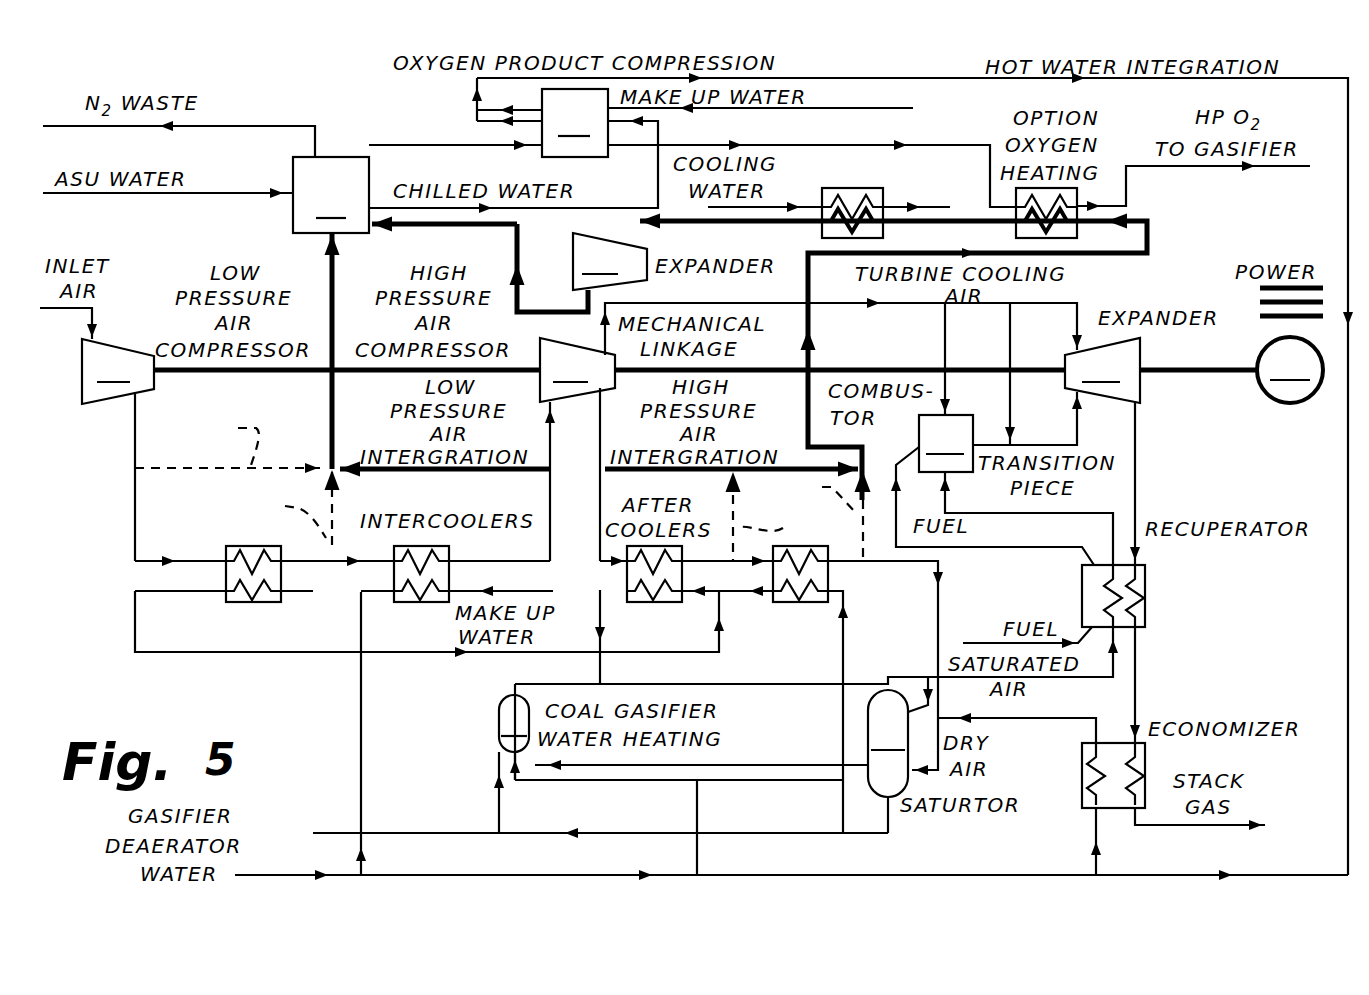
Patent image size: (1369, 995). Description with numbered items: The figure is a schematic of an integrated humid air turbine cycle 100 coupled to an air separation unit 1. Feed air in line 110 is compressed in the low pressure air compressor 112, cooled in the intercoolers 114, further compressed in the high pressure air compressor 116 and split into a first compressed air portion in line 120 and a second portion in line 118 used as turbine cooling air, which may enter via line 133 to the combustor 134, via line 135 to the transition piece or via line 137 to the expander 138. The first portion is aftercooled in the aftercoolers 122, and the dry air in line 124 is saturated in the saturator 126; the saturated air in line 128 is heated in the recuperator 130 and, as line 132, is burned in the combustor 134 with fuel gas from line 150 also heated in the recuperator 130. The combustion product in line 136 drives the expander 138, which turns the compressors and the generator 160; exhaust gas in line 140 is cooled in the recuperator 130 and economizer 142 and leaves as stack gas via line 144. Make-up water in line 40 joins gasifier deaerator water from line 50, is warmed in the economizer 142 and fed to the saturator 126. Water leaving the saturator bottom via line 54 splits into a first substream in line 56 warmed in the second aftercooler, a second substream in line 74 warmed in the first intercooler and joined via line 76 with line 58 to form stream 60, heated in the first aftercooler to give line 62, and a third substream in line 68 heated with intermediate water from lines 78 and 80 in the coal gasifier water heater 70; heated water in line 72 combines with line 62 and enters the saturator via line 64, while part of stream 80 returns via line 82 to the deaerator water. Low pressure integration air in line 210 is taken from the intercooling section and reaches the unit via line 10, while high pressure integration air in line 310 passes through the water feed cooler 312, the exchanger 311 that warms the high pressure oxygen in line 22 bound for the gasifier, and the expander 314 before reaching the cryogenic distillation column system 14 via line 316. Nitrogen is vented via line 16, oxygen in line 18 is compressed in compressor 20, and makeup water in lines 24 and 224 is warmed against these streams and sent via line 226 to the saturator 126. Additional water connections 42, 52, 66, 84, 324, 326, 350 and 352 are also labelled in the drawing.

The air separation unit 1 is at (198, 215).
The feed air line 10 is at (332, 413).
The cryogenic distillation column system 14 is at (331, 195).
The nitrogen product line 16 is at (314, 125).
The oxygen product line 18 is at (432, 145).
The oxygen compressor 20 is at (540, 117).
The compressed oxygen line 22 is at (1160, 166).
The makeup water line 24 is at (272, 192).
The make-up water line 40 is at (523, 592).
The water line 42 is at (361, 748).
The gasifier deaerator water line 50 is at (297, 874).
The heated water line to saturator 52 is at (1010, 718).
The saturator bottom water line 54 is at (892, 812).
The first water substream line 56 is at (843, 795).
The warmed water line 58 is at (763, 592).
The combined warmed water line 60 is at (705, 610).
The heated water line 62 is at (601, 656).
The saturator feed water line 64 is at (780, 684).
The water return line 66 is at (815, 848).
The third water substream line 68 is at (499, 810).
The coal gasifier water heater 70 is at (514, 737).
The heated water line 72 is at (572, 684).
The second water substream line 74 is at (372, 833).
The warmed intercooler water line 76 is at (406, 653).
The intermediate water stream line 78 is at (773, 765).
The lower intermediate water stream line 80 is at (772, 782).
The water return line 82 is at (697, 790).
The water line 84 is at (540, 782).
The integrated humid air turbine cycle 100 is at (250, 683).
The feed air line 110 is at (70, 310).
The low pressure air compressor 112 is at (118, 450).
The intercoolers 114 is at (252, 603).
The high pressure air compressor 116 is at (577, 449).
The second compressed air portion line 118 is at (606, 332).
The first compressed air portion line 120 is at (598, 425).
The aftercoolers 122 is at (772, 590).
The dry air line 124 is at (940, 606).
The saturator 126 is at (890, 743).
The saturated air line 128 is at (1045, 678).
The recuperator 130 is at (1146, 603).
The heated saturated air line 132 is at (1000, 513).
The turbine cooling air line to combustor 133 is at (985, 337).
The combustor 134 is at (946, 443).
The turbine cooling air line to transition piece 135 is at (1045, 337).
The combustion product line 136 is at (1076, 425).
The turbine cooling air line to expander 137 is at (1080, 320).
The expander 138 is at (1102, 370).
The exhaust gas line 140 is at (1136, 480).
The economizer 142 is at (1148, 772).
The stack gas line 144 is at (1150, 826).
The fuel gas line 150 is at (981, 643).
The generator 160 is at (1290, 370).
The low pressure air integration line 210 is at (397, 471).
The demineralized makeup water line 224 is at (868, 108).
The warmed makeup water line 226 is at (1348, 240).
The high pressure air integration line 310 is at (700, 470).
The heat exchanger 311 is at (1016, 230).
The water feed cooler 312 is at (822, 228).
The expander 314 is at (610, 261).
The air separation unit feed air line 316 is at (420, 228).
The cooling water inlet line 324 is at (780, 207).
The cooling water outlet line 326 is at (897, 207).
The water line 350 is at (918, 873).
The economizer water line 352 is at (1096, 852).